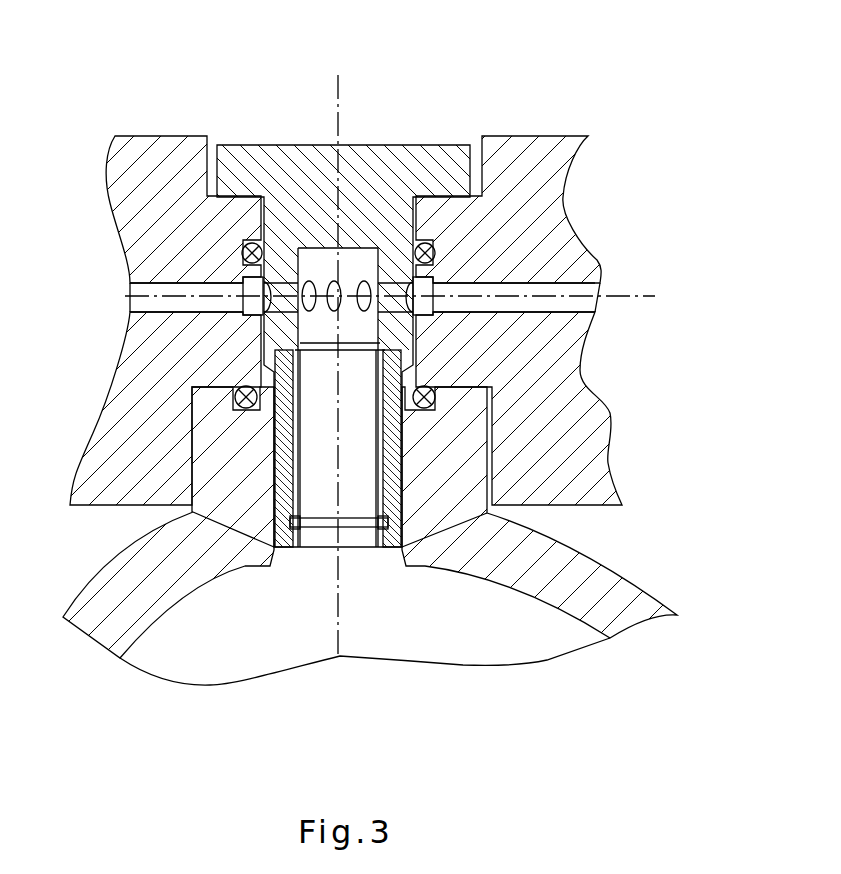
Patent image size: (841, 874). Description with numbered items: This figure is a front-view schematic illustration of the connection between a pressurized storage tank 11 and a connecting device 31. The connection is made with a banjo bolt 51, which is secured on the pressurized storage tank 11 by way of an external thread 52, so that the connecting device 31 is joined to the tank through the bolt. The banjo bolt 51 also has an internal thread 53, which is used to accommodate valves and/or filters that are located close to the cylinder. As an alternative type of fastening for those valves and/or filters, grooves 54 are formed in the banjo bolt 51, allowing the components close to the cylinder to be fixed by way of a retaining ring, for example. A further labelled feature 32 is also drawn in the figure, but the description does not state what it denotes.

The container body 11 is at (603, 585).
The housing 31 is at (539, 160).
The passage bore 32 is at (581, 290).
The insert 51 is at (297, 212).
The sleeve 52 is at (402, 463).
The pin 53 is at (380, 508).
The pin end 54 is at (293, 522).